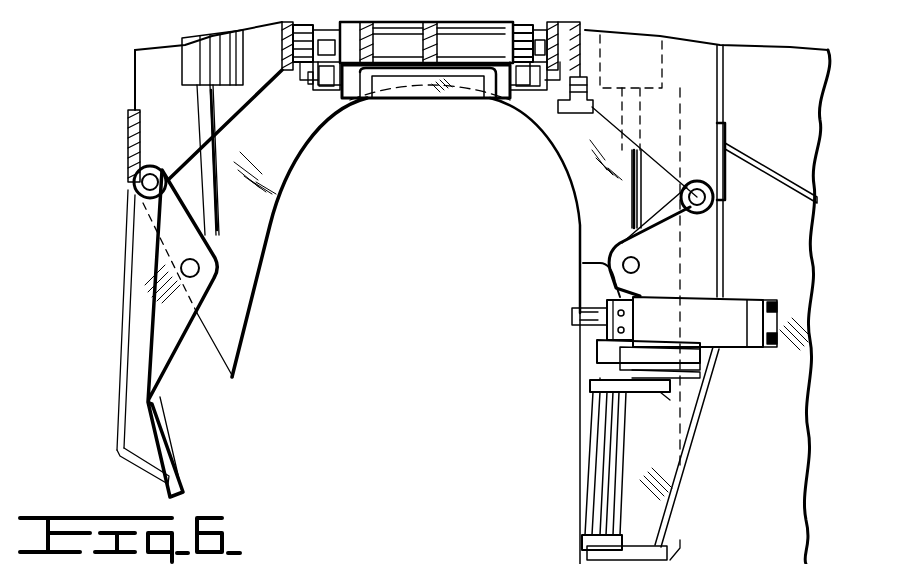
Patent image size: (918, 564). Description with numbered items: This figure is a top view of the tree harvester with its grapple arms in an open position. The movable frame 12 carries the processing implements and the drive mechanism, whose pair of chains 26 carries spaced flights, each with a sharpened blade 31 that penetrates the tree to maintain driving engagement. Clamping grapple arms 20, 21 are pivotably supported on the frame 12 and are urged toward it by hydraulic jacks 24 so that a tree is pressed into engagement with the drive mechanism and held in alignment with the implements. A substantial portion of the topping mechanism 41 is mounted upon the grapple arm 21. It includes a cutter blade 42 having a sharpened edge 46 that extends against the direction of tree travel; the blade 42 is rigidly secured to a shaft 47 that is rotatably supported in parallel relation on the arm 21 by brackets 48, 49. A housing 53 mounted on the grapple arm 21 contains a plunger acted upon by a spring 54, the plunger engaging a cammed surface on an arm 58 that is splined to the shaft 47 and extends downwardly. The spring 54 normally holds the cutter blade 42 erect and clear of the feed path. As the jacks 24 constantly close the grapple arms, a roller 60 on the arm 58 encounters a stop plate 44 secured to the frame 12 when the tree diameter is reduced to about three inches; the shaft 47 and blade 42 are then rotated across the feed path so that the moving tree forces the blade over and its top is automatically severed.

The movable frame 12 is at (718, 113).
The grapple arm 20 is at (140, 238).
The grapple arm 21 is at (665, 473).
The hydraulic jack 24 is at (196, 48).
The chain 26 is at (316, 95).
The sharpened blade 31 is at (425, 100).
The topping mechanism 41 is at (492, 405).
The cutter blade 42 is at (600, 468).
The stop plate 44 is at (592, 116).
The sharpened edge 46 is at (585, 556).
The shaft 47 is at (585, 265).
The bracket 48 is at (672, 558).
The bracket 49 is at (700, 364).
The housing 53 is at (738, 300).
The spring 54 is at (672, 398).
The arm 58 is at (600, 327).
The roller 60 is at (574, 310).